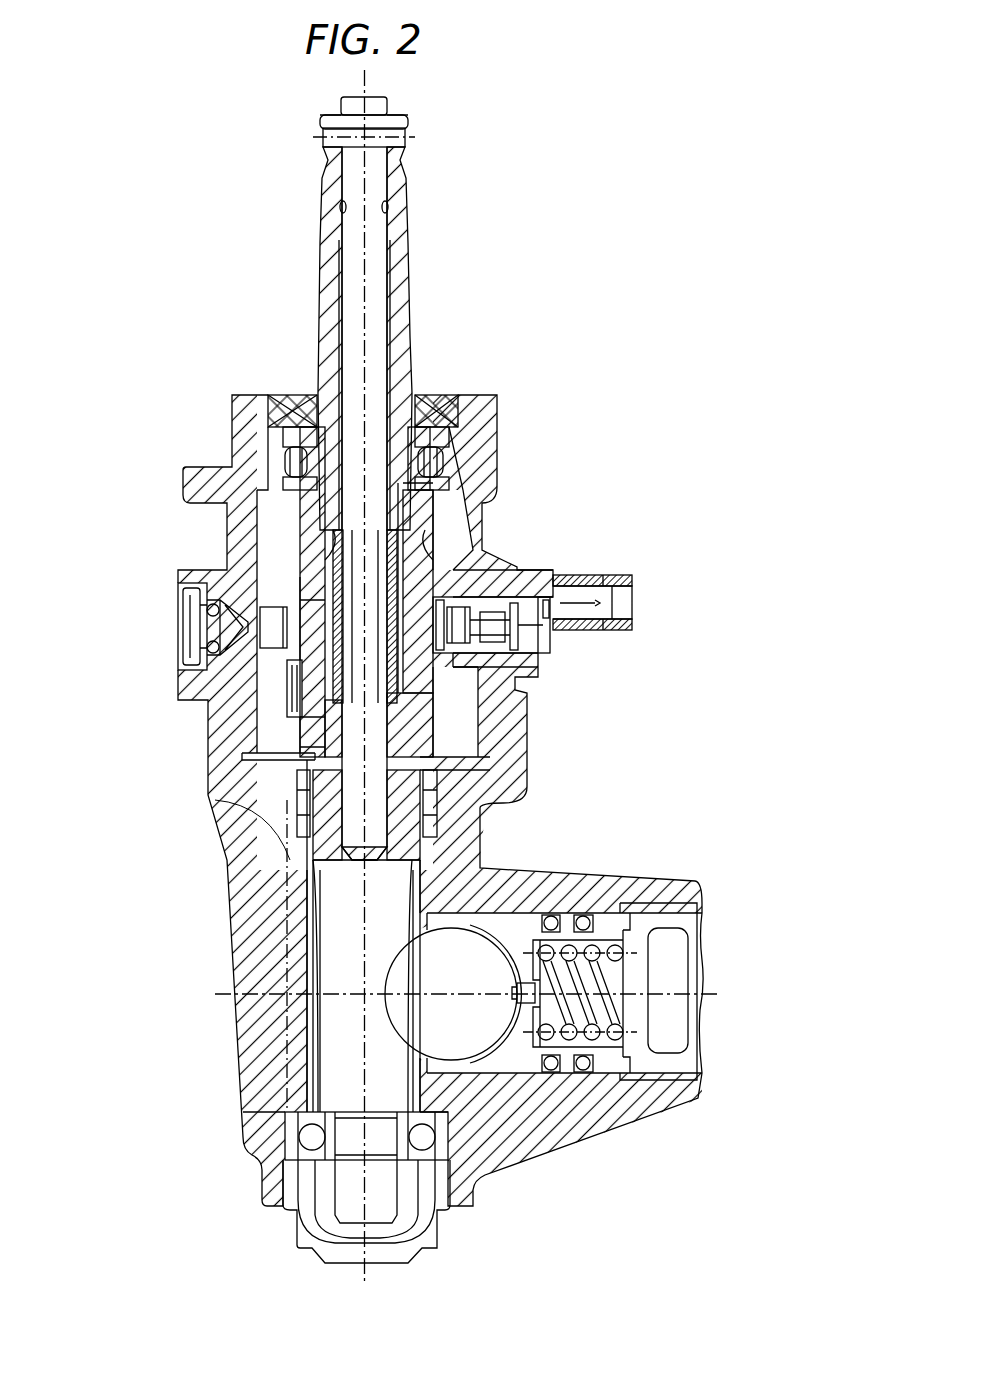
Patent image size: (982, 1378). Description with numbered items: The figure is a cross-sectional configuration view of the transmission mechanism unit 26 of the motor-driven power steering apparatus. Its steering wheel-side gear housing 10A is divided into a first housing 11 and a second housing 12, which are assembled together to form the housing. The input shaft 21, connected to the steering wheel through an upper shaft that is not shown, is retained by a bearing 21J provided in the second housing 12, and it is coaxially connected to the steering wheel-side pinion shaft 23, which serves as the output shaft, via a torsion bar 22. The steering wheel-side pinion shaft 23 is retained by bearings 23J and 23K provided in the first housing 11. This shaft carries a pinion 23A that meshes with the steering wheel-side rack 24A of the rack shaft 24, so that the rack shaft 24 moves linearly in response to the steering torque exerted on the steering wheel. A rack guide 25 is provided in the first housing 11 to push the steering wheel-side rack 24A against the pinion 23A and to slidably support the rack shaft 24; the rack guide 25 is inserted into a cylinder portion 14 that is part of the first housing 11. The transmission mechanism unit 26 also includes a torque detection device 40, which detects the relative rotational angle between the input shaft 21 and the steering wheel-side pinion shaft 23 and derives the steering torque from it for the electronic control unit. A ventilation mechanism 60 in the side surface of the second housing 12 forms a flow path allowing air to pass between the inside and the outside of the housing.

The transmission mechanism unit 26 is at (615, 187).
The input shaft 21 is at (402, 205).
The torsion bar 22 is at (377, 313).
The steering wheel-side gear housing 10A is at (510, 388).
The second housing 12 is at (232, 430).
The bearing 21J is at (440, 458).
The torque detection device 40 is at (556, 545).
The ventilation mechanism 60 is at (168, 563).
The bearing 23K is at (437, 803).
The cylinder portion 14 is at (510, 880).
The first housing 11 is at (230, 880).
The steering wheel-side rack 24A is at (402, 973).
The steering wheel-side pinion shaft 23 is at (350, 1018).
The pinion 23A is at (322, 1068).
The rack shaft 24 is at (488, 1033).
The rack guide 25 is at (607, 1062).
The bearing 23J is at (473, 1160).